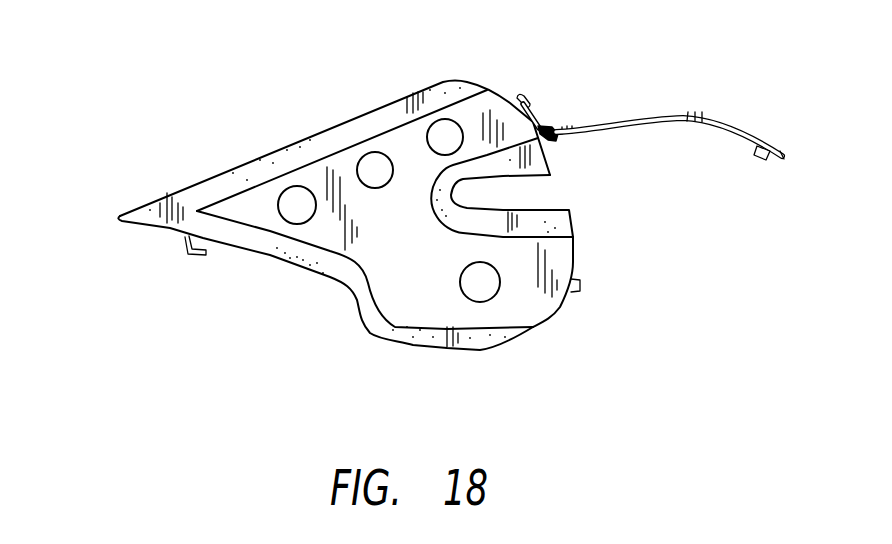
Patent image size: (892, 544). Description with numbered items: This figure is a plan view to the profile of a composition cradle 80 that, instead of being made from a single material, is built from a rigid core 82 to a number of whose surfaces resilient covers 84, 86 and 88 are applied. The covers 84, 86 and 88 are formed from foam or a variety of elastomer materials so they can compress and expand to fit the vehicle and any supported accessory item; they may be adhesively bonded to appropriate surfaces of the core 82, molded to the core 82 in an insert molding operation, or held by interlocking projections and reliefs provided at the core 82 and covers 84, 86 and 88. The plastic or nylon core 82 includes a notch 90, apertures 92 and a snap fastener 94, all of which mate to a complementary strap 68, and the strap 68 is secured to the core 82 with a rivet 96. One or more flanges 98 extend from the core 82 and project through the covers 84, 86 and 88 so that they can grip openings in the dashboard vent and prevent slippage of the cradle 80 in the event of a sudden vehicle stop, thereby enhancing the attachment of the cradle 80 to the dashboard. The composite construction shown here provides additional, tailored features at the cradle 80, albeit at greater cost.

The strap 68 is at (600, 130).
The composition cradle 80 is at (553, 138).
The rigid core 82 is at (378, 253).
The resilient cover 84 is at (447, 350).
The resilient cover 86 is at (388, 105).
The resilient cover 88 is at (553, 174).
The notch 90 is at (541, 138).
The apertures 92 is at (371, 188).
The snap fastener 94 is at (580, 286).
The rivet 96 is at (528, 94).
The flange 98 is at (183, 252).